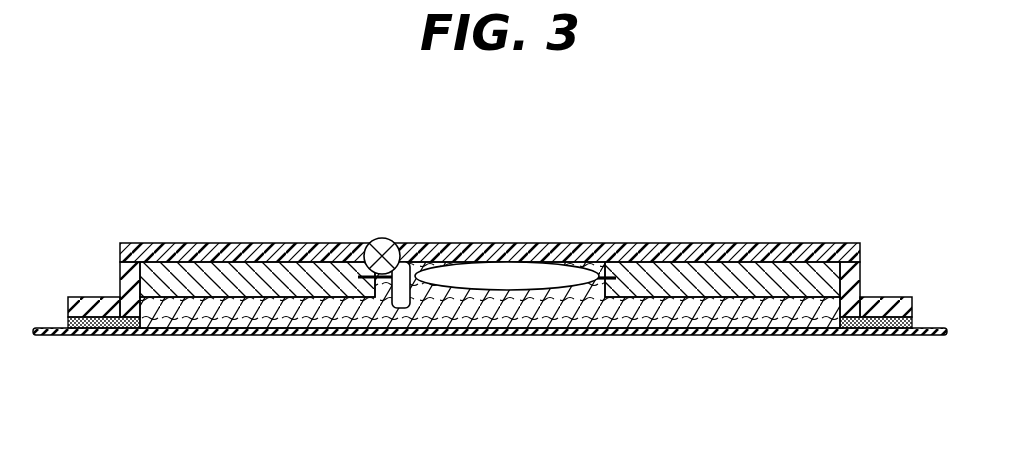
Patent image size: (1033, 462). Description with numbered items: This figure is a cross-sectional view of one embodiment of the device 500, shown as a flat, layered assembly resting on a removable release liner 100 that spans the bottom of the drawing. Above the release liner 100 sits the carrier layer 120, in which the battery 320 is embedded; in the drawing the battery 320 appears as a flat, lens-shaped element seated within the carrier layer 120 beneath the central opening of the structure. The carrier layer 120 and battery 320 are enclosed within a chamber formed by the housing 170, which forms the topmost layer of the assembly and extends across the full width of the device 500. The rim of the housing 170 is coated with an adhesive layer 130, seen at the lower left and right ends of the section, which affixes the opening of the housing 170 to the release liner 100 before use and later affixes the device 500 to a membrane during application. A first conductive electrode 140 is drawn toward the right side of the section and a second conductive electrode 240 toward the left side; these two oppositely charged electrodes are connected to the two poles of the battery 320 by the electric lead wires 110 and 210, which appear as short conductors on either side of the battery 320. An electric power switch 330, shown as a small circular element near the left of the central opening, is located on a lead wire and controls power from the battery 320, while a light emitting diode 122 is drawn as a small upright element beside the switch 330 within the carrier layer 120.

The device 500 is at (382, 122).
The removable release liner 100 is at (700, 335).
The electric lead wire 110 is at (612, 278).
The carrier layer 120 is at (504, 251).
The light emitting diode 122 is at (408, 266).
The adhesive layer 130 is at (866, 335).
The first conductive electrode 140 is at (800, 262).
The housing 170 is at (738, 243).
The electric lead wire 210 is at (360, 270).
The second conductive electrode 240 is at (120, 263).
The battery 320 is at (513, 270).
The electric power switch 330 is at (374, 241).